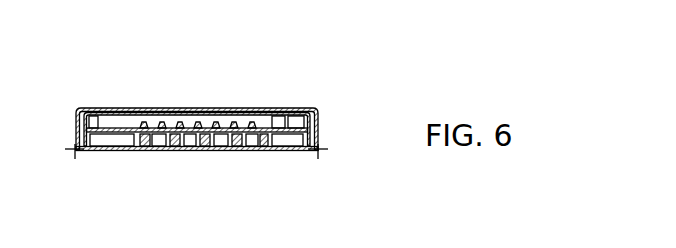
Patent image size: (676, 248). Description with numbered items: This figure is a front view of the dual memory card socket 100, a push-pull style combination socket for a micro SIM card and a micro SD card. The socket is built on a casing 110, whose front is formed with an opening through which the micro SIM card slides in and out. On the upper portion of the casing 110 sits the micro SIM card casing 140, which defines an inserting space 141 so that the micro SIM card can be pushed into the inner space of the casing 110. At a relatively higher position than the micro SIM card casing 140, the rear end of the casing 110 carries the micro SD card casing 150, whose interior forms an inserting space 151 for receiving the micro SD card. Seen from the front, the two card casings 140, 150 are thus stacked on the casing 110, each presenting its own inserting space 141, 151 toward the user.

The dual memory card socket 100 is at (68, 48).
The casing 110 is at (172, 152).
The micro SIM card casing 140 is at (247, 118).
The inserting space 141 is at (105, 152).
The micro SD card casing 150 is at (268, 110).
The inserting space 151 is at (125, 108).